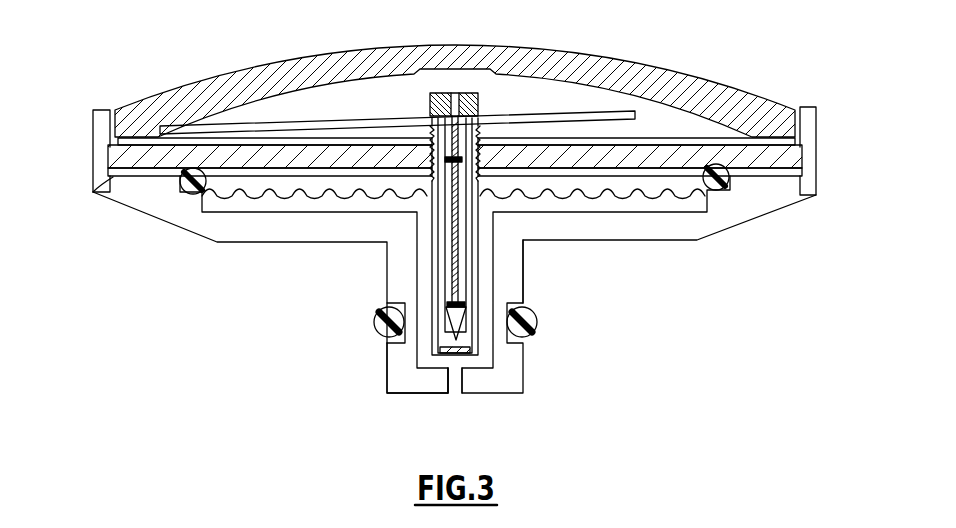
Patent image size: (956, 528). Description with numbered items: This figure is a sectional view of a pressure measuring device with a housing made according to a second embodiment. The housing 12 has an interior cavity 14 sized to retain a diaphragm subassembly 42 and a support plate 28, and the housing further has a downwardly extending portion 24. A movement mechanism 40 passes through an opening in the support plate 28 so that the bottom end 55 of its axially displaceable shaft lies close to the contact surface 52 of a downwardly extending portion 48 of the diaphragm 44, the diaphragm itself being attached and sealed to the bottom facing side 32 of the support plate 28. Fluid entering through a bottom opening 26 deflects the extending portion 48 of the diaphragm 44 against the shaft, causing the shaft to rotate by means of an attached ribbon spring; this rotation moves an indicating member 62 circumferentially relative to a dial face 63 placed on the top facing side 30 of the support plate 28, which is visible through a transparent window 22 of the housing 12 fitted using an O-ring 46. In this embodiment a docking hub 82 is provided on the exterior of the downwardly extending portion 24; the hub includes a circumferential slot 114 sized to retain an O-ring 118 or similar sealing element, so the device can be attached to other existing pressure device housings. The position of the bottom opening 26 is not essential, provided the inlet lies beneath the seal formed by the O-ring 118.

The housing 12 is at (782, 200).
The interior cavity 14 is at (646, 103).
The transparent window 22 is at (265, 63).
The downwardly extending portion 24 is at (530, 290).
The bottom opening 26 is at (456, 396).
The support plate 28 is at (155, 170).
The top facing side 30 is at (738, 143).
The bottom facing side 32 is at (93, 192).
The movement mechanism 40 is at (480, 204).
The diaphragm subassembly 42 is at (657, 203).
The diaphragm 44 is at (283, 200).
The O-ring 46 is at (190, 194).
The downwardly extending portion of the diaphragm 48 is at (482, 255).
The contact surface 52 is at (462, 354).
The bottom end of the shaft 55 is at (462, 340).
The indicating member 62 is at (367, 110).
The dial face 63 is at (213, 133).
The docking hub 82 is at (386, 368).
The circumferential slot 114 is at (378, 338).
The O-ring 118 is at (378, 316).